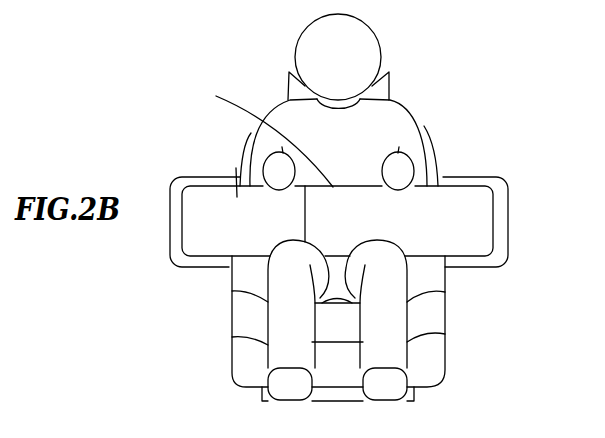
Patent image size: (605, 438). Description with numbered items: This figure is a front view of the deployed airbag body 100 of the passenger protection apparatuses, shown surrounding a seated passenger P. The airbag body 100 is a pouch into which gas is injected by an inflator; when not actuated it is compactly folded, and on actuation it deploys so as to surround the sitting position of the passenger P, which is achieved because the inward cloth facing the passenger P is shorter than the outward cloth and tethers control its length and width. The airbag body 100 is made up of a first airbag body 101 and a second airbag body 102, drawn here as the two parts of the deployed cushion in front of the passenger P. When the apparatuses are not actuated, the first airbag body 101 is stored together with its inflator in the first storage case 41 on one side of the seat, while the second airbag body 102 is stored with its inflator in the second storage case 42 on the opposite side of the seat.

The passenger P is at (375, 43).
The first storage case 41 is at (508, 247).
The second storage case 42 is at (170, 250).
The airbag body 100 is at (231, 144).
The first airbag body 101 is at (216, 96).
The second airbag body 102 is at (236, 168).